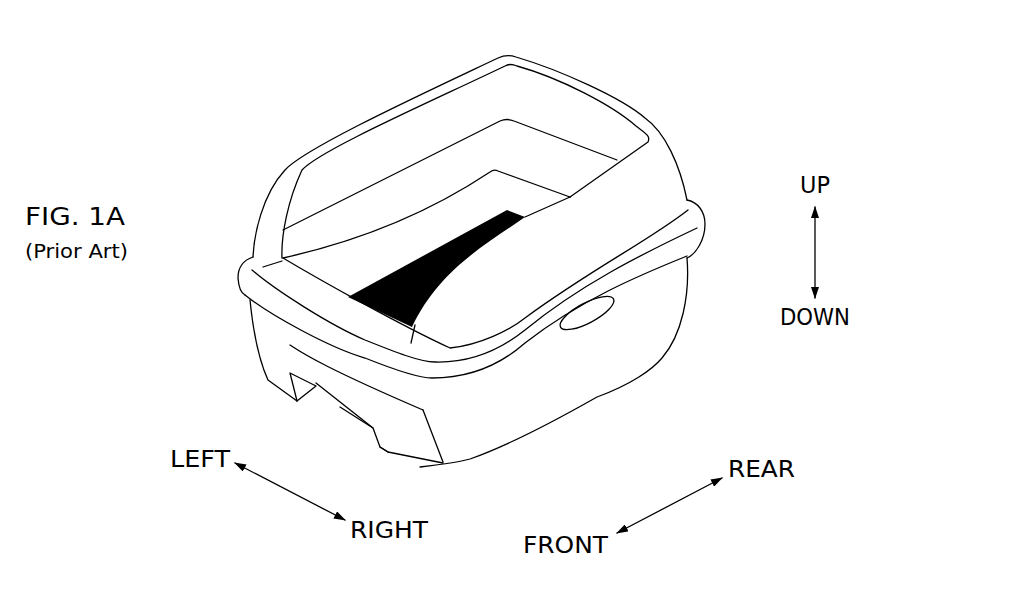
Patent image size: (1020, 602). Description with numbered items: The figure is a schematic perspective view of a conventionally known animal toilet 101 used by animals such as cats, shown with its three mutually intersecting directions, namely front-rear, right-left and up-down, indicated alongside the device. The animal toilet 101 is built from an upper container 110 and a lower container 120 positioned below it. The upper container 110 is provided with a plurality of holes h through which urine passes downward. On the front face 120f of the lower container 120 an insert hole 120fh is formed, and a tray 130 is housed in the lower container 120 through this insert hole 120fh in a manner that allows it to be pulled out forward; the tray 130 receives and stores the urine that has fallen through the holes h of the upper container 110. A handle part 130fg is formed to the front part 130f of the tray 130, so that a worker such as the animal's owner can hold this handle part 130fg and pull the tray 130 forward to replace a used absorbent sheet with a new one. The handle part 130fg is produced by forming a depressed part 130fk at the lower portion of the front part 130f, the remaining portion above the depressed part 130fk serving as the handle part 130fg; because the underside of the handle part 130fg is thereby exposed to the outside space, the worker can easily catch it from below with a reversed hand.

The animal toilet 101 is at (636, 83).
The upper container 110 is at (394, 158).
The lower container 120 is at (573, 381).
The front face 120f is at (316, 357).
The insert hole 120fh is at (266, 343).
The tray 130 is at (423, 452).
The front part 130f is at (390, 443).
The handle part 130fg is at (334, 388).
The depressed part 130fk is at (340, 420).
The holes h is at (407, 256).